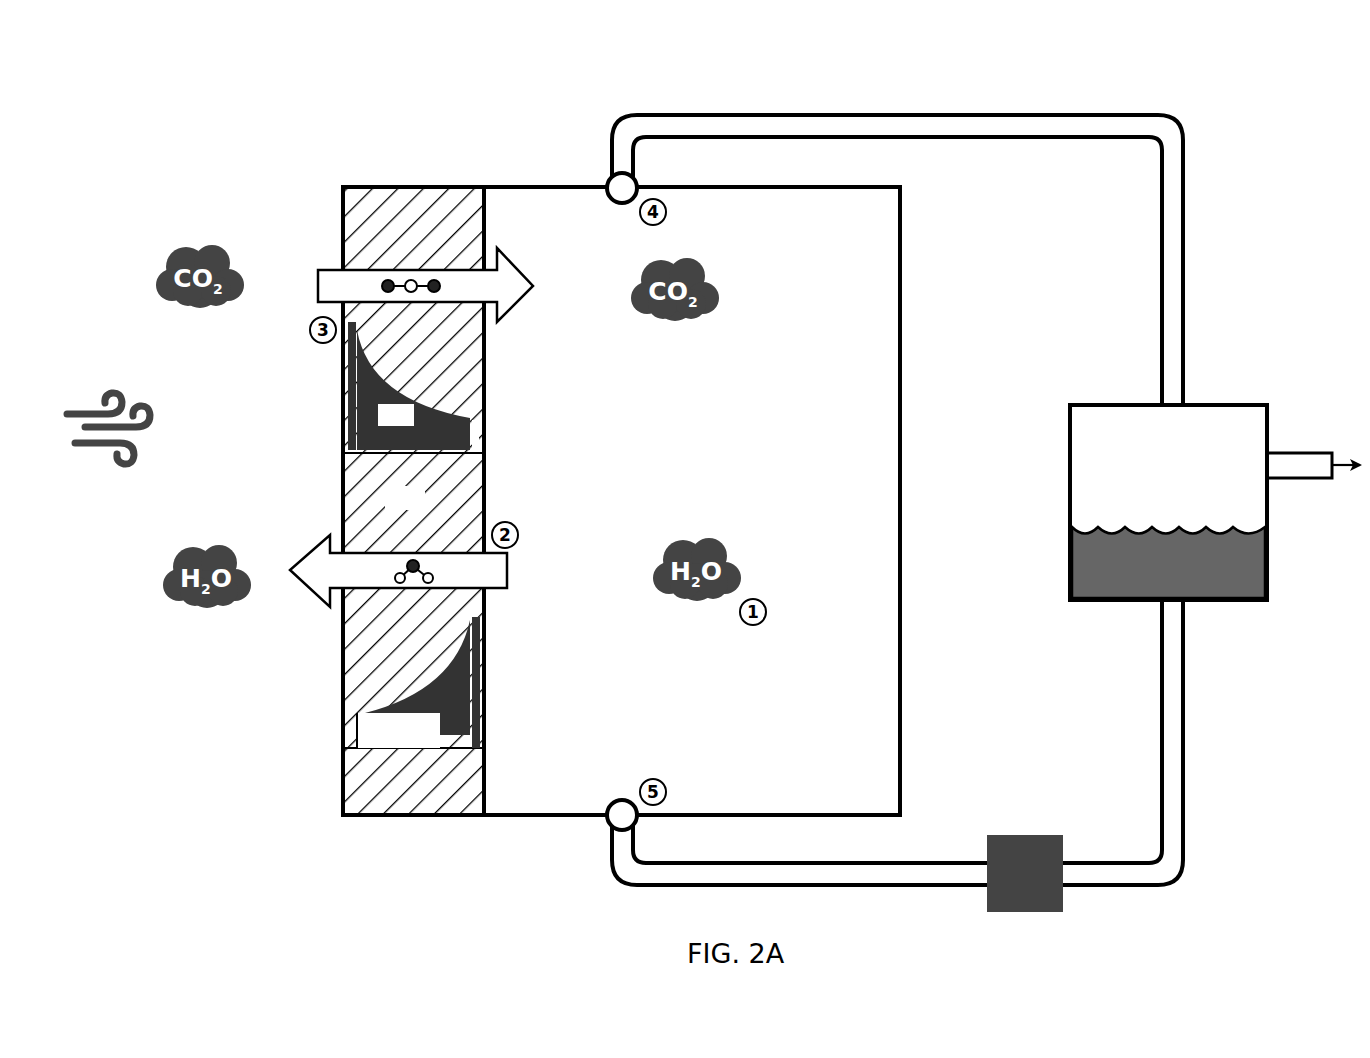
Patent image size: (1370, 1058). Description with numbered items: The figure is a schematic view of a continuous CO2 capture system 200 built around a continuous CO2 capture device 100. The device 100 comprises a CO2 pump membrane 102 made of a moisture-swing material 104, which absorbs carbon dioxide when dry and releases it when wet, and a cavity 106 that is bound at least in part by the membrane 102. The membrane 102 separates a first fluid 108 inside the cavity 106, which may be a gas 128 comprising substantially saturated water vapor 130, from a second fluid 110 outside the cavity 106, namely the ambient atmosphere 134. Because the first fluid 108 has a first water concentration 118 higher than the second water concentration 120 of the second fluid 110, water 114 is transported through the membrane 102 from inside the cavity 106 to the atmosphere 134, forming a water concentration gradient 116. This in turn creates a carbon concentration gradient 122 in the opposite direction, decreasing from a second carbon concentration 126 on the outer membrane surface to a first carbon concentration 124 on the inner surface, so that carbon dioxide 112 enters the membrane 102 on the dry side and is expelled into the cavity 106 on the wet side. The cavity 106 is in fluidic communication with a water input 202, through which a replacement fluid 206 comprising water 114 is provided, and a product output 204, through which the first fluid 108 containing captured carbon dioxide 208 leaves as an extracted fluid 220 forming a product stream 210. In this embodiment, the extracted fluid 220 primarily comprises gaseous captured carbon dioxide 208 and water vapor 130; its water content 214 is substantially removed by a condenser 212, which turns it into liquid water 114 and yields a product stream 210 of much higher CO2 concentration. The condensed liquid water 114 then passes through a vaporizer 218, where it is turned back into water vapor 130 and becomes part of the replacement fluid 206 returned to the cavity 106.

The continuous CO2 capture device 100 is at (335, 90).
The CO2 pump membrane 102 is at (405, 212).
The moisture-swing material 104 is at (405, 498).
The cavity 106 is at (925, 346).
The first fluid 108 is at (683, 464).
The second fluid 110 is at (97, 458).
The carbon dioxide 112 is at (183, 253).
The water 114 is at (427, 574).
The water concentration gradient 116 is at (413, 684).
The first water concentration 118 is at (477, 642).
The second water concentration 120 is at (350, 733).
The carbon concentration gradient 122 is at (413, 386).
The first carbon concentration 124 is at (480, 433).
The second carbon concentration 126 is at (350, 360).
The gas 128 is at (862, 748).
The water vapor 130 is at (170, 582).
The ambient atmosphere 134 is at (85, 408).
The continuous CO2 capture system 200 is at (1244, 152).
The water input 202 is at (610, 819).
The product output 204 is at (608, 181).
The replacement fluid 206 is at (835, 870).
The captured carbon dioxide 208 is at (700, 316).
The product stream 210 is at (1352, 492).
The condenser 212 is at (1205, 405).
The water content 214 is at (1232, 585).
The vaporizer 218 is at (1022, 835).
The extracted fluid 220 is at (840, 117).